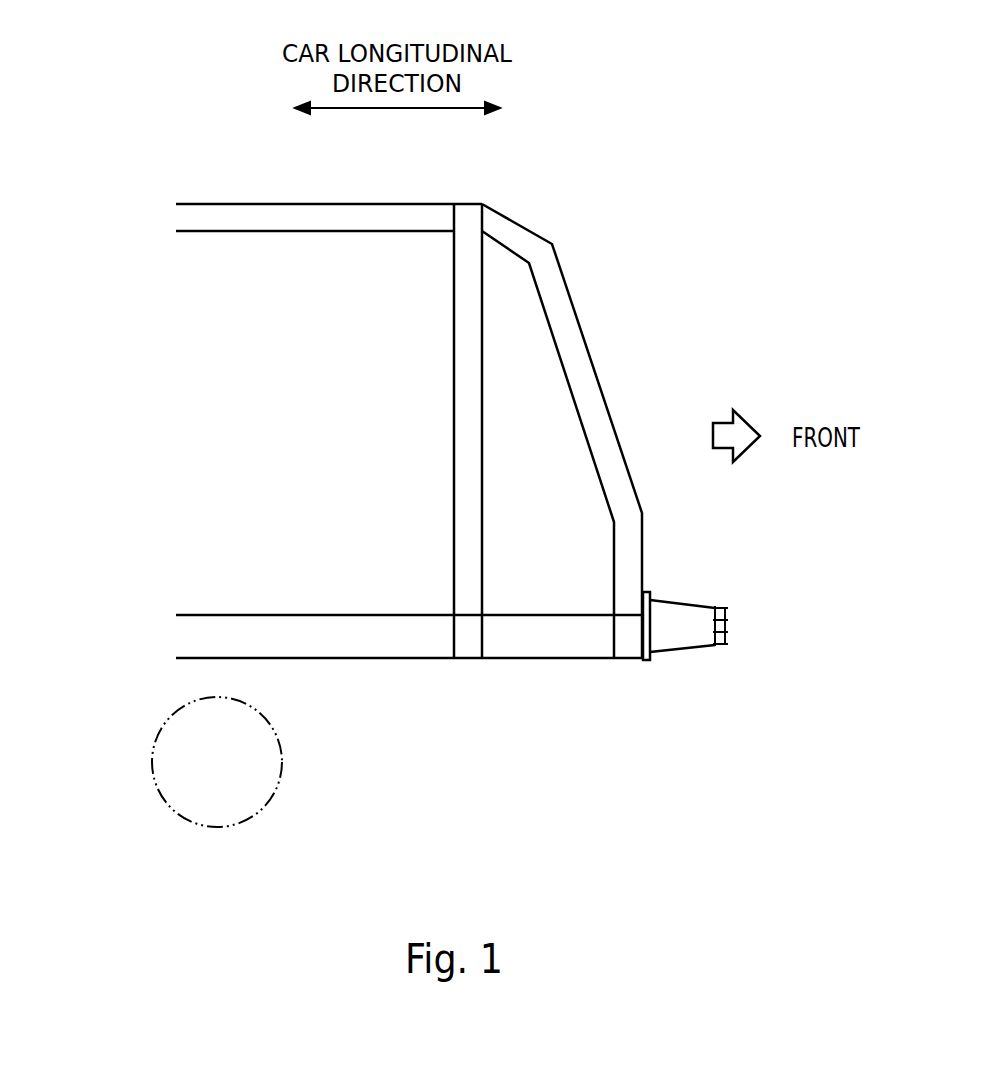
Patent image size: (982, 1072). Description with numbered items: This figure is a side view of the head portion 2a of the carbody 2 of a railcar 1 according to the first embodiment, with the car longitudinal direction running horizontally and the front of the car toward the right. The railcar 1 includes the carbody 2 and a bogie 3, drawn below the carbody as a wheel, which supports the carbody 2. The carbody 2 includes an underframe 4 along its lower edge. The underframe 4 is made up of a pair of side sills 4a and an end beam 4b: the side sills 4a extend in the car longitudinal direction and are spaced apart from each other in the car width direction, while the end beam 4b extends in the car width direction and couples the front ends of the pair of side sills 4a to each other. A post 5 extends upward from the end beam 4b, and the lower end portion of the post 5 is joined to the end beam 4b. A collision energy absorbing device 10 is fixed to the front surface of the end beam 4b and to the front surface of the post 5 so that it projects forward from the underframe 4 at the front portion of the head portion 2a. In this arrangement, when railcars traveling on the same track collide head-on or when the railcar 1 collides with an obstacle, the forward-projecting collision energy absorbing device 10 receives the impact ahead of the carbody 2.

The railcar 1 is at (678, 133).
The carbody 2 is at (213, 204).
The head portion 2a is at (534, 222).
The bogie 3 is at (288, 776).
The underframe 4 is at (170, 660).
The side sills 4a is at (413, 653).
The end beam 4b is at (631, 653).
The post 5 is at (643, 530).
The collision energy absorbing device 10 is at (682, 652).